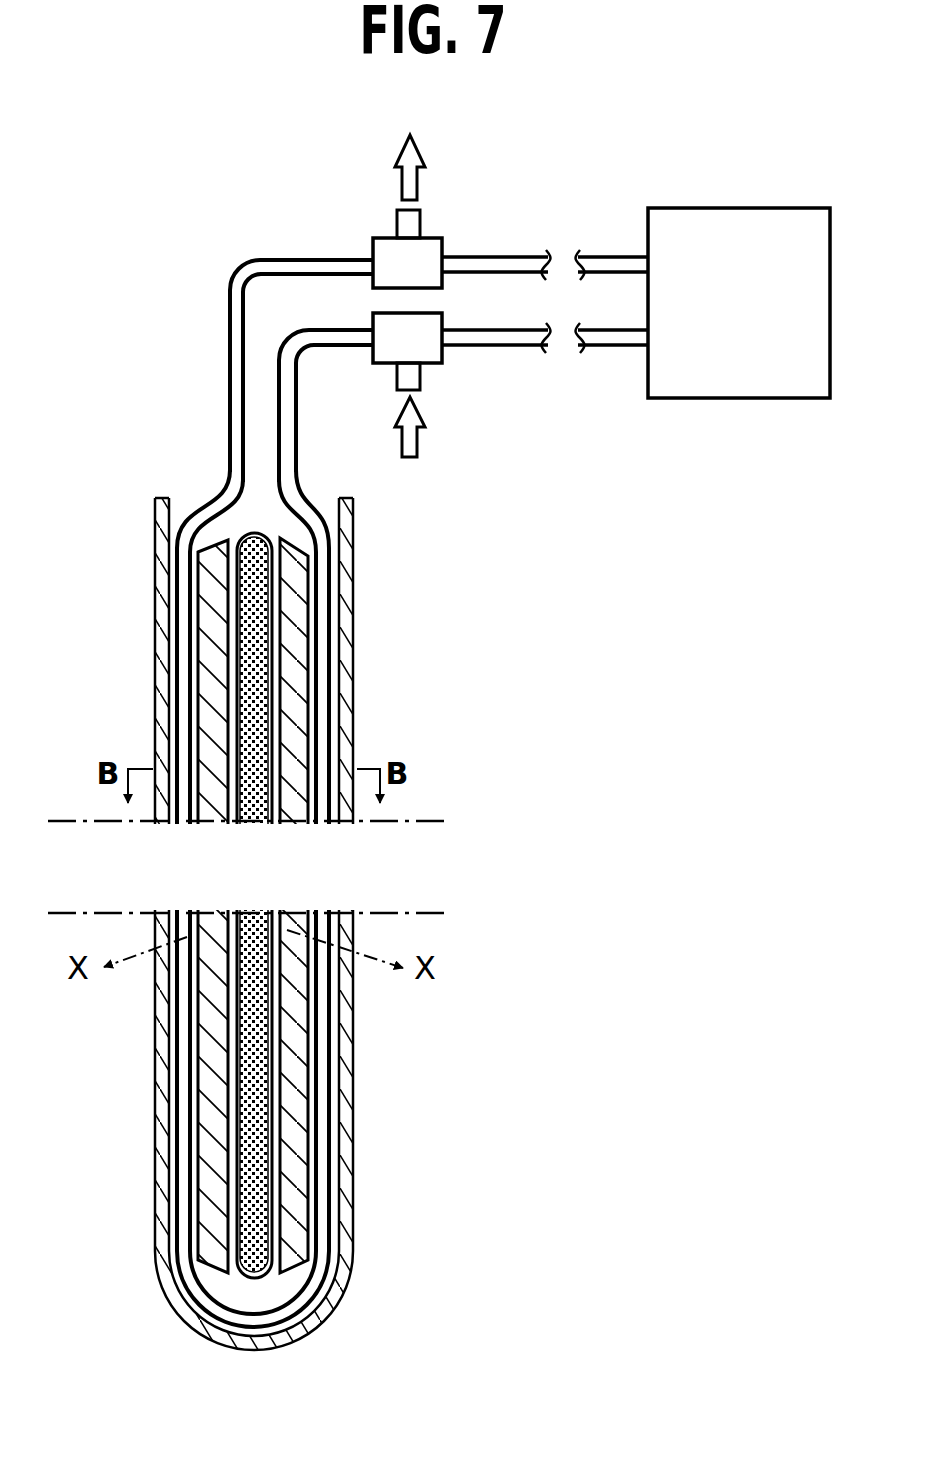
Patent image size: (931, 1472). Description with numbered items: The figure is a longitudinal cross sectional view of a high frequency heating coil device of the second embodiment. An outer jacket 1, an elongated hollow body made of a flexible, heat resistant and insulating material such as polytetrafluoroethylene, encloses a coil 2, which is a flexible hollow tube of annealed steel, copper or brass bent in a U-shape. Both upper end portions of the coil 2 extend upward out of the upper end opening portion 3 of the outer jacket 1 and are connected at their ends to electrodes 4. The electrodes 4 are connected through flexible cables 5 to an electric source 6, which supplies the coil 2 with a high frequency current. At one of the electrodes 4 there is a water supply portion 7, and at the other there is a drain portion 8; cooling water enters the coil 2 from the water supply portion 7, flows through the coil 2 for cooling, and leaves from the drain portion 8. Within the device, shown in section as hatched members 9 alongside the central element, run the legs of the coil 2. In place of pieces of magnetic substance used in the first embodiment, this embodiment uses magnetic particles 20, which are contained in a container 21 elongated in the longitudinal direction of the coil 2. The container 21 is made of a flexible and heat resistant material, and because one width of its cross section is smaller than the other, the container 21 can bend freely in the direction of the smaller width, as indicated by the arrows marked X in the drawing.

The outer jacket 1 is at (353, 653).
The coil 2 is at (227, 369).
The upper end opening portion 3 is at (193, 474).
The electrode 4 is at (441, 237).
The pipe 5 is at (606, 257).
The electric source 6 is at (788, 208).
The water supply portion 7 is at (397, 392).
The drain portion 8 is at (396, 219).
The electrode 9 is at (314, 718).
The magnetic particles 20 is at (331, 897).
The container 21 is at (258, 536).